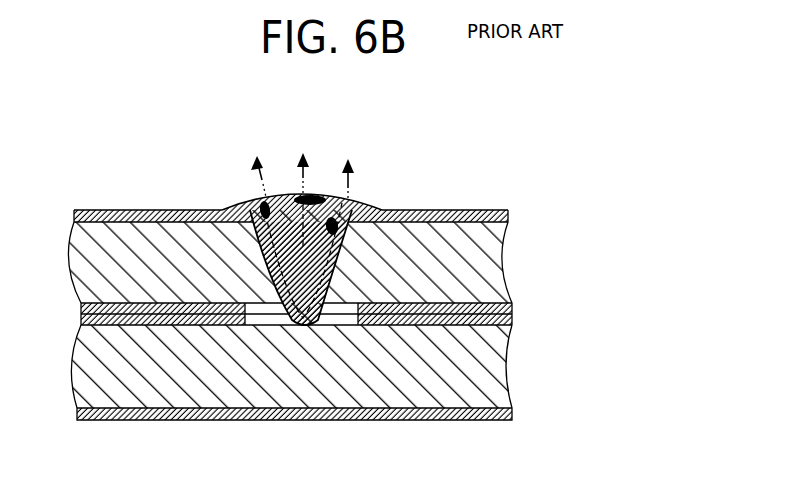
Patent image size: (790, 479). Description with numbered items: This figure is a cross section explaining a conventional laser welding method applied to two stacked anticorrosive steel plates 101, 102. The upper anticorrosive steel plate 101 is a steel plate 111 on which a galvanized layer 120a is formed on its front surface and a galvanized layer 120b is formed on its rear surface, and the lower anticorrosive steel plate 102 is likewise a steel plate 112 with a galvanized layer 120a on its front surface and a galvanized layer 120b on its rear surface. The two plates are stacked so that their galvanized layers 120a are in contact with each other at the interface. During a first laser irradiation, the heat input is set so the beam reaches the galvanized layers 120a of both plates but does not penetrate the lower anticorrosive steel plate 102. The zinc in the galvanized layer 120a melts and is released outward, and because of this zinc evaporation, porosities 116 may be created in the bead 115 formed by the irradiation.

The anticorrosive steel plate 101 is at (608, 177).
The anticorrosive steel plate 102 is at (608, 307).
The steel plate 111 is at (472, 258).
The steel plate 112 is at (472, 367).
The bead 115 is at (353, 210).
The porosities 116 is at (315, 196).
The galvanized layer 120a is at (503, 305).
The galvanized layer 120b is at (507, 215).